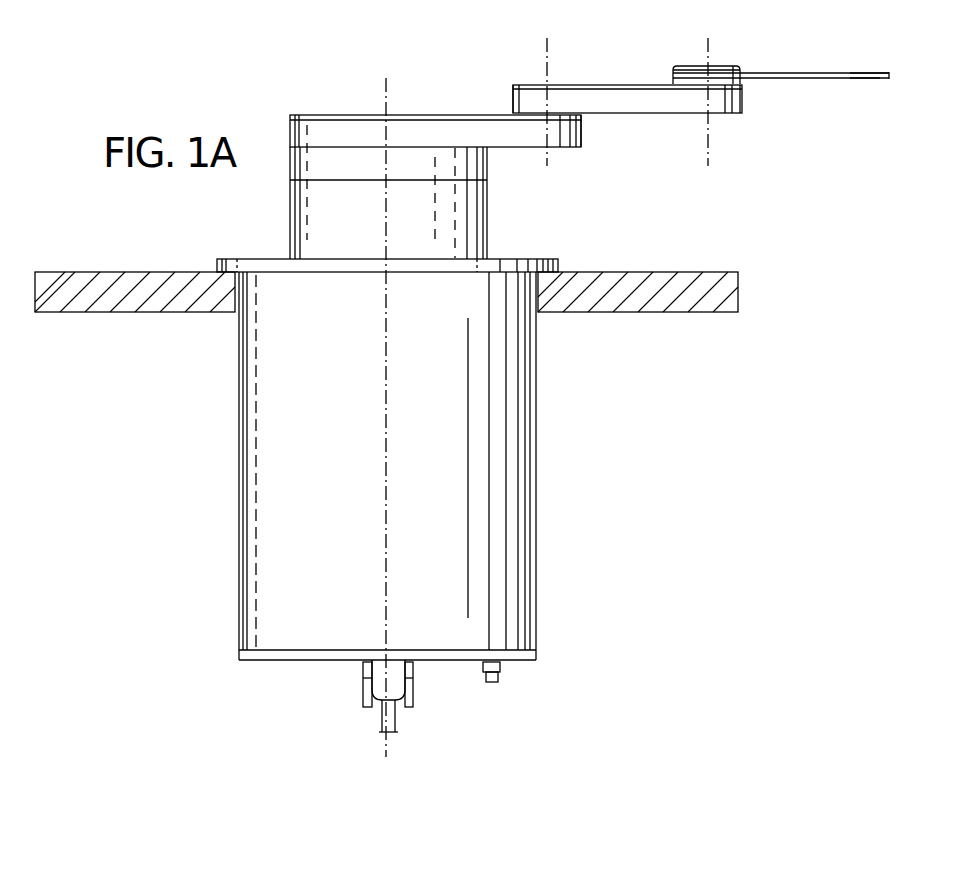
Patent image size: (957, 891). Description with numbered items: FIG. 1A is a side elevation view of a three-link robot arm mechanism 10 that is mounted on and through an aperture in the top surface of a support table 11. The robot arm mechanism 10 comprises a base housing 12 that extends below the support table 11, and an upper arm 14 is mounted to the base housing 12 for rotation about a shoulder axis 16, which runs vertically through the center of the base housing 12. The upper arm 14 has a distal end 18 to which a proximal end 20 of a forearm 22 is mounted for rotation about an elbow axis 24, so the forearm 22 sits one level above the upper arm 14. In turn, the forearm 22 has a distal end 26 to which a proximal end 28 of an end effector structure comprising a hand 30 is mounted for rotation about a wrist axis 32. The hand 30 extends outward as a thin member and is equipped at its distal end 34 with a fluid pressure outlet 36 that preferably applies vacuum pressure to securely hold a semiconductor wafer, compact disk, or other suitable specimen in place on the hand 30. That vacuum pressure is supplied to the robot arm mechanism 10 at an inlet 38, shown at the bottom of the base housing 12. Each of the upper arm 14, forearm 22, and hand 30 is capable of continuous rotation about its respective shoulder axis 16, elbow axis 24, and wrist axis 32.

The three-link robot arm mechanism 10 is at (187, 533).
The support table 11 is at (738, 290).
The base housing 12 is at (537, 487).
The upper arm 14 is at (289, 116).
The shoulder axis 16 is at (386, 92).
The distal end 18 is at (582, 134).
The proximal end 20 is at (511, 100).
The forearm 22 is at (581, 85).
The elbow axis 24 is at (547, 50).
The distal end 26 is at (743, 100).
The proximal end 28 is at (672, 78).
The hand 30 is at (805, 72).
The wrist axis 32 is at (708, 50).
The distal end 34 is at (892, 76).
The fluid pressure outlet 36 is at (858, 72).
The inlet 38 is at (492, 684).